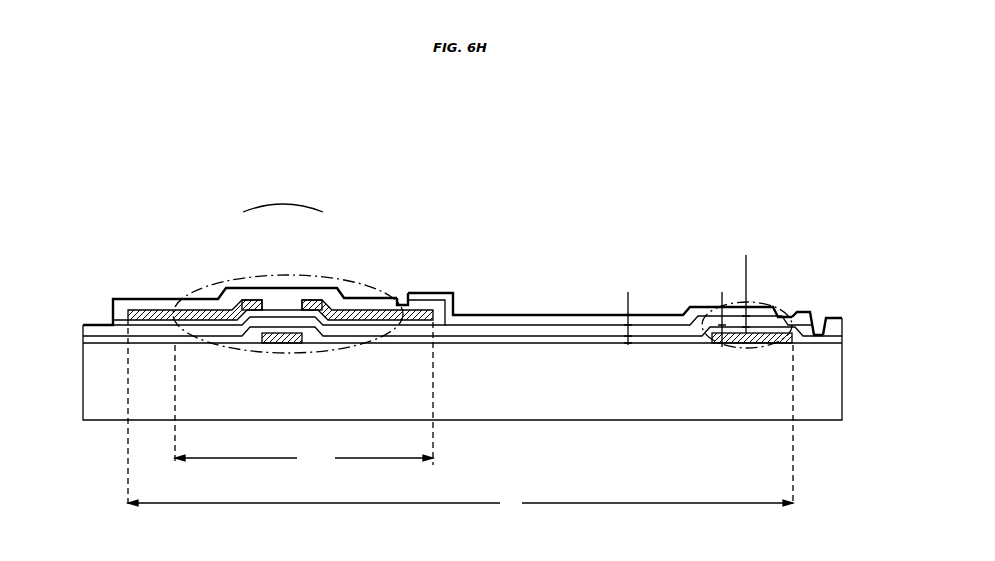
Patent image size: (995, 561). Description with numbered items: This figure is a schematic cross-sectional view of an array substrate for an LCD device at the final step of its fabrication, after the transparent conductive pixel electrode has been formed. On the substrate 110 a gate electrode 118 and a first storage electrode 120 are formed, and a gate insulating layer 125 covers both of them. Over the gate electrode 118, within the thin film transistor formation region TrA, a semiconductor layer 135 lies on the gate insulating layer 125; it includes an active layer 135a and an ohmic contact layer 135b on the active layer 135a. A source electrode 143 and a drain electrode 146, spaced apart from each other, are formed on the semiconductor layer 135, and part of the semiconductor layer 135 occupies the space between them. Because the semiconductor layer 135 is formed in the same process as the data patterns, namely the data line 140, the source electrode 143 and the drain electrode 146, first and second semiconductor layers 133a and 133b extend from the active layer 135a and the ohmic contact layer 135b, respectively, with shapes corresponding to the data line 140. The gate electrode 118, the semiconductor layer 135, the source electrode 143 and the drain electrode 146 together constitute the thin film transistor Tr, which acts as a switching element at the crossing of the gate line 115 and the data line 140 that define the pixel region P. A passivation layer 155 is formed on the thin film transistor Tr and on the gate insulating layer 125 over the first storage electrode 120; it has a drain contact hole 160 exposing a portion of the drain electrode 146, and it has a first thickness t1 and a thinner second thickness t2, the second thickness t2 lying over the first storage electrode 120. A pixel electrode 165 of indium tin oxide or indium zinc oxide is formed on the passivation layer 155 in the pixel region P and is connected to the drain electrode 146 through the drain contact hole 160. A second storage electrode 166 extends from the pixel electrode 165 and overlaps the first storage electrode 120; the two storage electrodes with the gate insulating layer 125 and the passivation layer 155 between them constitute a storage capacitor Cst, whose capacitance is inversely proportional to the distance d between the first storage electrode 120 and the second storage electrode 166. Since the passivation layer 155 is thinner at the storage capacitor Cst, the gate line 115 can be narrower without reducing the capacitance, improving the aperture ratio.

The substrate 110 is at (829, 402).
The gate line 115 is at (803, 307).
The gate electrode 118 is at (294, 346).
The first storage electrode 120 is at (728, 349).
The gate insulating layer 125 is at (511, 340).
The first semiconductor layer 133a is at (152, 330).
The second semiconductor layer 133b is at (138, 321).
The semiconductor layer 135 is at (283, 197).
The active layer 135a is at (268, 318).
The ohmic contact layer 135b is at (242, 299).
The data line 140 is at (137, 311).
The source electrode 143 is at (203, 301).
The drain electrode 146 is at (325, 298).
The passivation layer 155 is at (585, 330).
The drain contact hole 160 is at (409, 289).
The pixel electrode 165 is at (523, 320).
The second storage electrode 166 is at (787, 323).
The thin film transistor Tr is at (339, 360).
The storage capacitor Cst is at (768, 300).
The first thickness t1 is at (645, 318).
The second thickness t2 is at (730, 294).
The distance d is at (725, 319).
The thin film transistor formation region TrA is at (304, 394).
The pixel region P is at (460, 419).